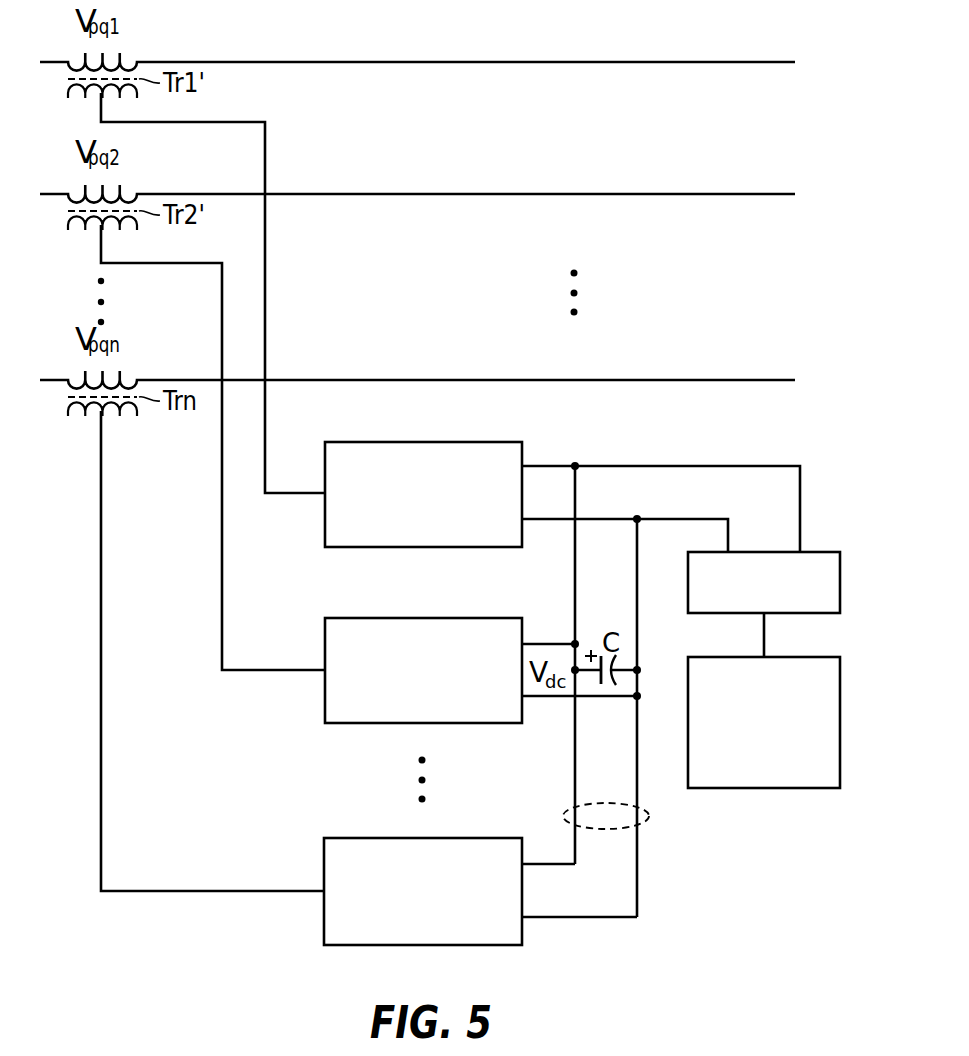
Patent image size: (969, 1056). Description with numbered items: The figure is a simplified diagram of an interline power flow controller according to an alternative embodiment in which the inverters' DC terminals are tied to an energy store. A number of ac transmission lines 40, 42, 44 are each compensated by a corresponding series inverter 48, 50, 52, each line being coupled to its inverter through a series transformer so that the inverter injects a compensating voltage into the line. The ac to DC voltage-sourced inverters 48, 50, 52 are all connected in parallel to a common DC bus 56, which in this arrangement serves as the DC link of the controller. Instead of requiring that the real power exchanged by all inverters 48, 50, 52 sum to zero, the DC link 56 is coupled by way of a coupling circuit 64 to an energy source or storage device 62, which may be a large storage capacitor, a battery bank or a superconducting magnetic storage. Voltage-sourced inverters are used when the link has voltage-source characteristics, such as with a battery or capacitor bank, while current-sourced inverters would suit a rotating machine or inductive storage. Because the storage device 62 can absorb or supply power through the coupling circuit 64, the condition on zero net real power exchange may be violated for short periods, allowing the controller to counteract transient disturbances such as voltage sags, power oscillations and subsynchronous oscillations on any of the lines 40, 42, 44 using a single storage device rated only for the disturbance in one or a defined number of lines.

The transmission line 40 is at (420, 62).
The transmission line 42 is at (430, 194).
The transmission line 44 is at (433, 380).
The series inverter 48 is at (440, 442).
The series inverter 50 is at (440, 618).
The series inverter 52 is at (440, 838).
The DC bus 56 is at (650, 819).
The energy source or storage device 62 is at (841, 723).
The coupling circuit 64 is at (841, 583).